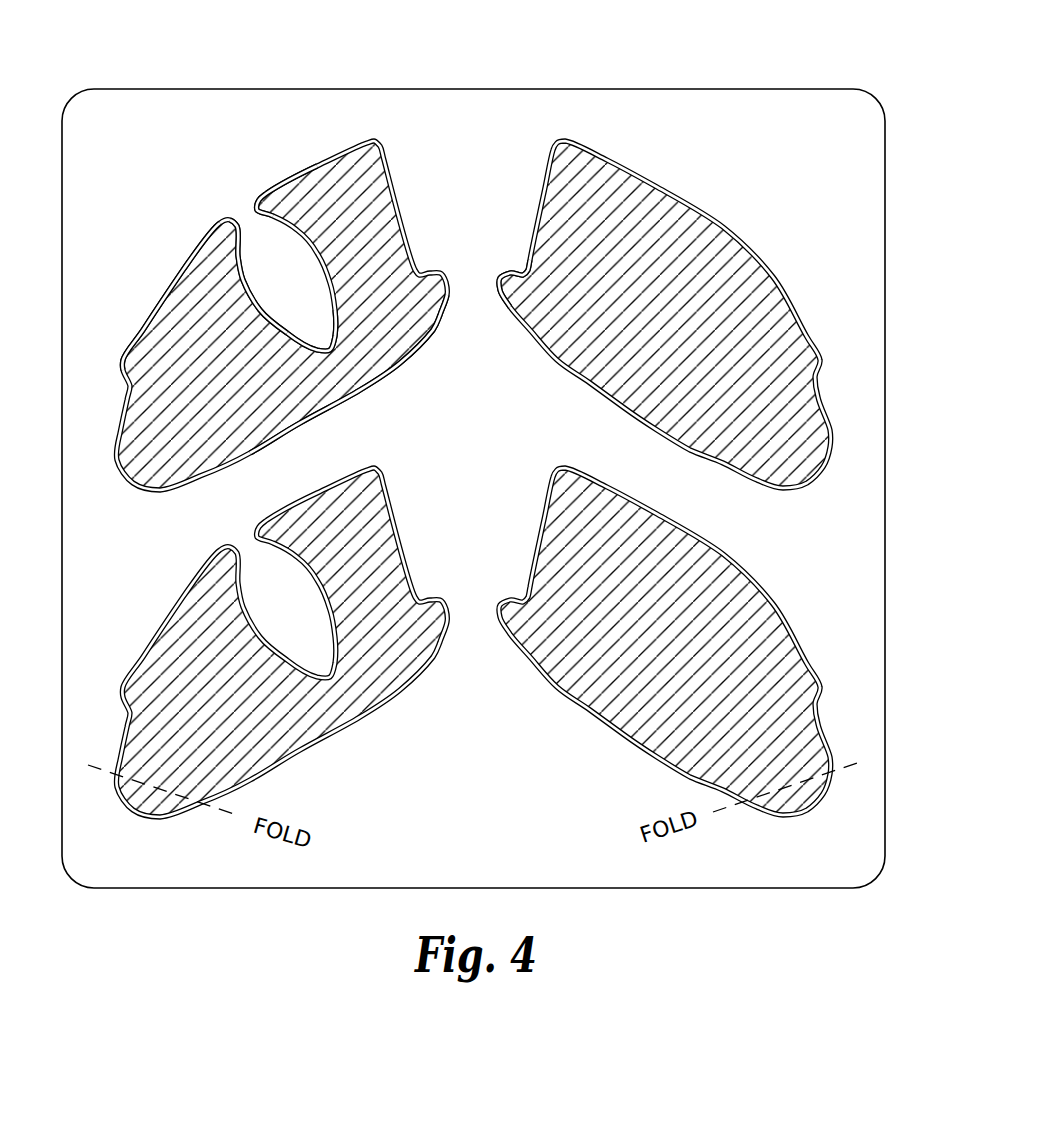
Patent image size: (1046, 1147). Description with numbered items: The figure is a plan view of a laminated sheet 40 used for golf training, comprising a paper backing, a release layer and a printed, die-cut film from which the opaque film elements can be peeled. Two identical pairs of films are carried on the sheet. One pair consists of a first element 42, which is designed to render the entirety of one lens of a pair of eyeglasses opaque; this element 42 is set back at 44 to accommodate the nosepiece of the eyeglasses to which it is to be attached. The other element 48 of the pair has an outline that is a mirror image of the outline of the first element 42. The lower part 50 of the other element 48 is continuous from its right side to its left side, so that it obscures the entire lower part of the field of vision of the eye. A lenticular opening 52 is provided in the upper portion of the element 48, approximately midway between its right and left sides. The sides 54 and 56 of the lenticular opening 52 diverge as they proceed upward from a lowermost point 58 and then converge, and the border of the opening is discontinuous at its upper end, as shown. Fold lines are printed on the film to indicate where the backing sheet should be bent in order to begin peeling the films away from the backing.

The laminated sheet 40 is at (726, 86).
The first element 42 is at (707, 241).
The set back 44 is at (533, 262).
The other element 48 is at (377, 210).
The lower part 50 is at (335, 373).
The lenticular opening 52 is at (258, 283).
The side of lenticular opening 54 is at (233, 257).
The side of lenticular opening 56 is at (259, 206).
The lowermost point 58 is at (302, 350).